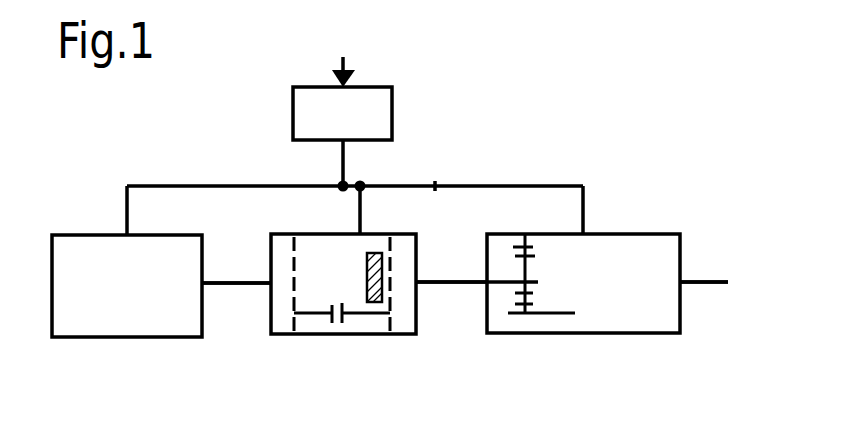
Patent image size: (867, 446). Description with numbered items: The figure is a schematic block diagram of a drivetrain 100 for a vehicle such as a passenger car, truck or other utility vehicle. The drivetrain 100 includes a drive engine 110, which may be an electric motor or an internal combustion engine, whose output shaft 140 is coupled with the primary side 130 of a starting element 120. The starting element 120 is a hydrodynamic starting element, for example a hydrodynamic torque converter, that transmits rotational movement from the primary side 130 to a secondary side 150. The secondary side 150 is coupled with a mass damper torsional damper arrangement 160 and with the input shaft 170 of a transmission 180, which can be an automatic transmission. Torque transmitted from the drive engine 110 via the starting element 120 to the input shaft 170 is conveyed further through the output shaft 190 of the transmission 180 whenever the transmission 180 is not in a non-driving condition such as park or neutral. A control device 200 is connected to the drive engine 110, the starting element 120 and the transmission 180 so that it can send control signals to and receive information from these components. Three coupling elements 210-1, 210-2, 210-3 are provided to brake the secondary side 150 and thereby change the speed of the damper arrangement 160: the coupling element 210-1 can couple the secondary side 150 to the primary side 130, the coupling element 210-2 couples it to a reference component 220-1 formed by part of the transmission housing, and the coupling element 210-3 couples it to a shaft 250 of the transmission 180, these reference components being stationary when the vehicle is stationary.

The drivetrain 100 is at (728, 90).
The drive engine 110 is at (88, 340).
The starting element 120 is at (417, 313).
The primary side 130 is at (282, 314).
The output shaft 140 is at (243, 280).
The secondary side 150 is at (402, 322).
The mass damper torsional damper arrangement 160 is at (360, 277).
The input shaft 170 is at (463, 282).
The transmission 180 is at (658, 333).
The output shaft 190 is at (717, 280).
The control device 200 is at (310, 87).
The coupling element 210-1 is at (332, 323).
The coupling element 210-2 is at (532, 247).
The coupling element 210-3 is at (540, 296).
The reference component 220-1 is at (648, 233).
The shaft 250 is at (553, 315).